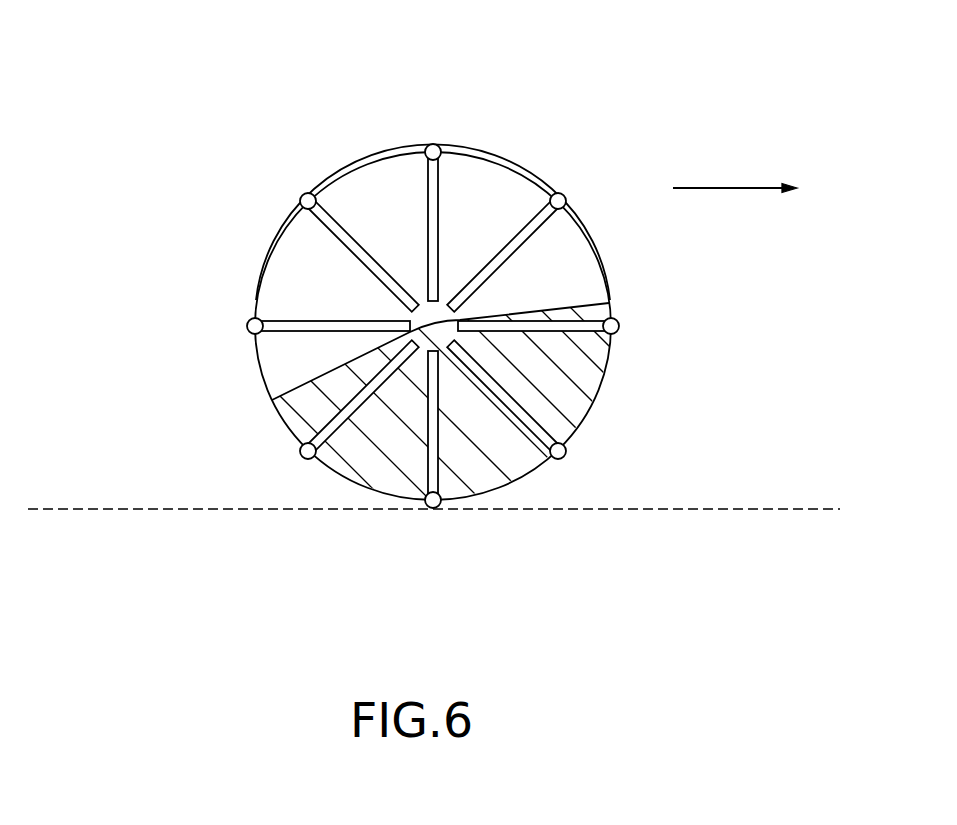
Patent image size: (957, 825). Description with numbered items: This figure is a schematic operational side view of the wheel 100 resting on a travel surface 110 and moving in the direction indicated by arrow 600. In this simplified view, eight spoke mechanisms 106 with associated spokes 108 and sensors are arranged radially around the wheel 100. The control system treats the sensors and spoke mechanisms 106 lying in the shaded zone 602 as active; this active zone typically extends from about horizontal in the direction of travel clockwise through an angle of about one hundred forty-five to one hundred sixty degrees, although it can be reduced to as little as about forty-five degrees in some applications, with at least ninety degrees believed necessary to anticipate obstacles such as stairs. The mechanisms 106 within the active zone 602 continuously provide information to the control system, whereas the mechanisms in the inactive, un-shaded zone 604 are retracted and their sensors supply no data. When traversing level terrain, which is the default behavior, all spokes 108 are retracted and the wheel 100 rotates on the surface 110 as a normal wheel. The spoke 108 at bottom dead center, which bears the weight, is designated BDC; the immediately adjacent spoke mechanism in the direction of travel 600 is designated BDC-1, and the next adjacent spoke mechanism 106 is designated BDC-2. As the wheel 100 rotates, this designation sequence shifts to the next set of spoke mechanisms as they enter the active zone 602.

The wheel 100 is at (350, 128).
The spoke mechanism 106 is at (438, 206).
The spoke 108 is at (302, 198).
The un-shaded zone 604 is at (520, 172).
The direction of travel 600 is at (735, 187).
The shaded zone 602 is at (568, 360).
The travel surface 110 is at (743, 505).
The spoke at bottom dead center BDC is at (440, 506).
The immediately adjacent spoke mechanism BDC-1 is at (566, 450).
The next adjacent spoke mechanism BDC-2 is at (612, 317).